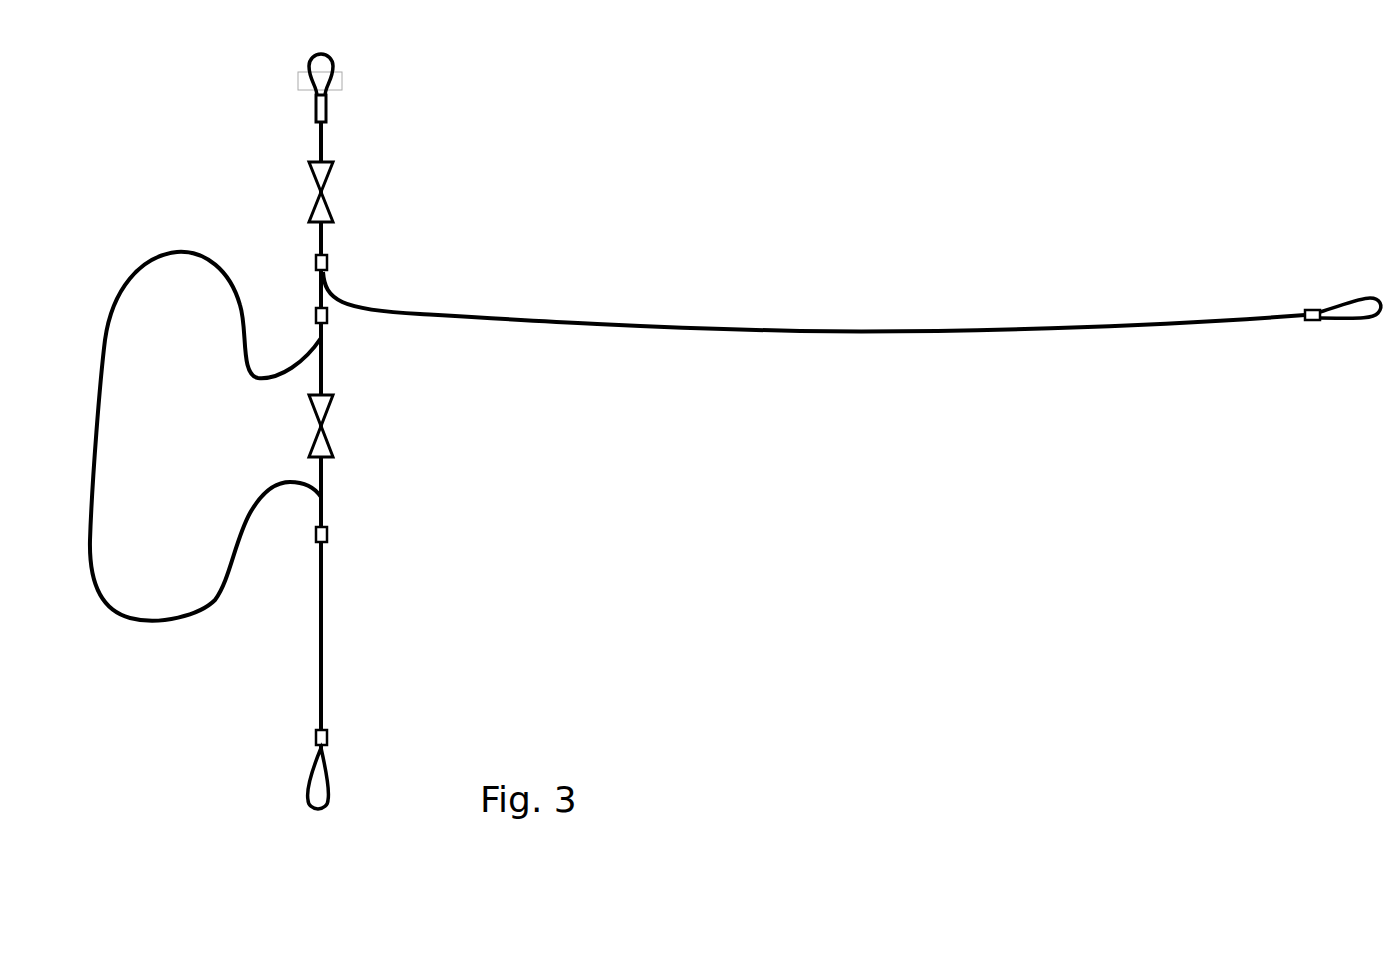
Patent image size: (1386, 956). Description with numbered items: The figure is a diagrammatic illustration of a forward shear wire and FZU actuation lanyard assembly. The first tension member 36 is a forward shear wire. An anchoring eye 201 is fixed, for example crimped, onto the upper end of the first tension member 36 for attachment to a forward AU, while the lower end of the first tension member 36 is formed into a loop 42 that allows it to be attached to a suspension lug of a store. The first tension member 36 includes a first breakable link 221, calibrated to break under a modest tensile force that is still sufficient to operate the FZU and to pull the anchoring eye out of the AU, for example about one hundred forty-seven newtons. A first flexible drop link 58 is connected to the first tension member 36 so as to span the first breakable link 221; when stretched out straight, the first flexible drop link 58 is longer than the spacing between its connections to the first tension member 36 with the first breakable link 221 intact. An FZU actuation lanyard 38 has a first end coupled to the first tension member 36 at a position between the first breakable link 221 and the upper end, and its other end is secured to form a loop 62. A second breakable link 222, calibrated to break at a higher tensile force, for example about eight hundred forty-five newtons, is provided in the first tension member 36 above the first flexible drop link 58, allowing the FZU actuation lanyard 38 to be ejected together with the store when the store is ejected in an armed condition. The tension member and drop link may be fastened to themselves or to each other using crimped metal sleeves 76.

The first tension member 36 is at (323, 633).
The FZU actuation lanyard 38 is at (1072, 333).
The loop 42 is at (330, 768).
The first flexible drop link 58 is at (100, 440).
The loop 62 is at (1355, 320).
The crimped metal sleeves 76 is at (316, 262).
The anchoring eye 201 is at (335, 58).
The first breakable link 221 is at (326, 430).
The second breakable link 222 is at (325, 176).